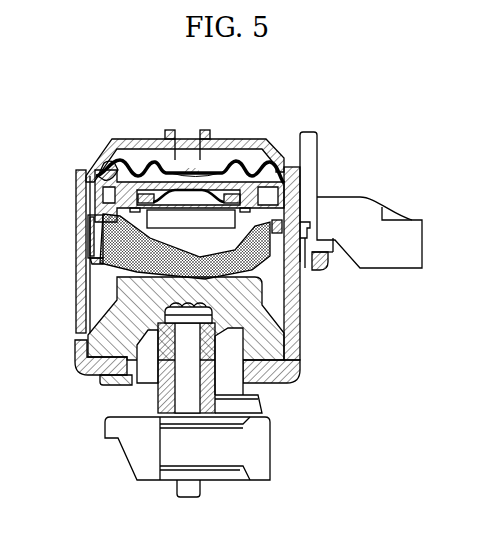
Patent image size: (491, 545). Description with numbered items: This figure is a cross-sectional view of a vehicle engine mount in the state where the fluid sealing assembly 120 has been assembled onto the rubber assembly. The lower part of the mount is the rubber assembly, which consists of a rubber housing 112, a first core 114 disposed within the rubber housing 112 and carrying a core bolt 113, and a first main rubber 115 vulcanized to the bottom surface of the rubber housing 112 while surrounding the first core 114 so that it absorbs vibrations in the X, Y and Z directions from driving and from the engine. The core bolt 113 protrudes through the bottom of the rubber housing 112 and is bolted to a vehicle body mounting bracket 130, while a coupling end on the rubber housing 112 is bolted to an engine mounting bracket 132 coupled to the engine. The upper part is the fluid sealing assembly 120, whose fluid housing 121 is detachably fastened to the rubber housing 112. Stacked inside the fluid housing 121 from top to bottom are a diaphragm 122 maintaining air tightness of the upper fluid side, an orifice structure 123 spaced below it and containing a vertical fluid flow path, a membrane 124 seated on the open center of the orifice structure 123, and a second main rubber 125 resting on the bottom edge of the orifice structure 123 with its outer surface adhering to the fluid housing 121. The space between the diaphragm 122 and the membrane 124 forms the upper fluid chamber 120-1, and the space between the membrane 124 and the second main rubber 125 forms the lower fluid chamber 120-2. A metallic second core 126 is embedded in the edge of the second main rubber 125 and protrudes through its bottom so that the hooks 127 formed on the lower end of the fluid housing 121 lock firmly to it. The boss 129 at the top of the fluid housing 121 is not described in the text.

The fluid sealing assembly 120 is at (203, 242).
The fluid housing 121 is at (128, 142).
The diaphragm 122 is at (224, 170).
The orifice structure 123 is at (113, 164).
The membrane 124 is at (110, 194).
The second main rubber 125 is at (115, 266).
The second core 126 is at (97, 234).
The hook 127 is at (317, 266).
The air vent boss 129 is at (170, 132).
The upper fluid chamber 120-1 is at (157, 185).
The lower fluid chamber 120-2 is at (300, 262).
The rubber housing 112 is at (305, 330).
The core bolt 113 is at (222, 400).
The first core 114 is at (212, 374).
The first main rubber 115 is at (283, 348).
The vehicle body mounting bracket 130 is at (258, 452).
The engine mounting bracket 132 is at (370, 207).